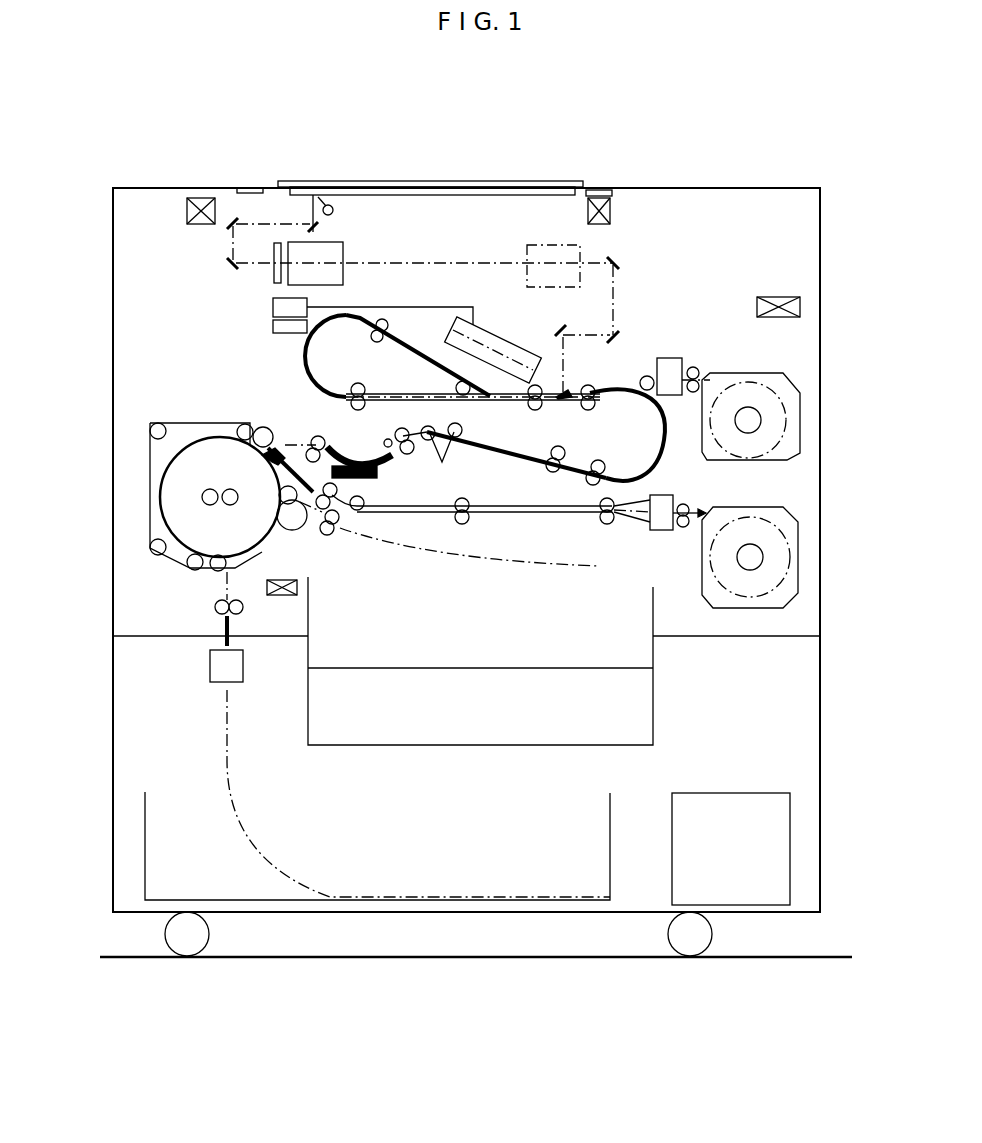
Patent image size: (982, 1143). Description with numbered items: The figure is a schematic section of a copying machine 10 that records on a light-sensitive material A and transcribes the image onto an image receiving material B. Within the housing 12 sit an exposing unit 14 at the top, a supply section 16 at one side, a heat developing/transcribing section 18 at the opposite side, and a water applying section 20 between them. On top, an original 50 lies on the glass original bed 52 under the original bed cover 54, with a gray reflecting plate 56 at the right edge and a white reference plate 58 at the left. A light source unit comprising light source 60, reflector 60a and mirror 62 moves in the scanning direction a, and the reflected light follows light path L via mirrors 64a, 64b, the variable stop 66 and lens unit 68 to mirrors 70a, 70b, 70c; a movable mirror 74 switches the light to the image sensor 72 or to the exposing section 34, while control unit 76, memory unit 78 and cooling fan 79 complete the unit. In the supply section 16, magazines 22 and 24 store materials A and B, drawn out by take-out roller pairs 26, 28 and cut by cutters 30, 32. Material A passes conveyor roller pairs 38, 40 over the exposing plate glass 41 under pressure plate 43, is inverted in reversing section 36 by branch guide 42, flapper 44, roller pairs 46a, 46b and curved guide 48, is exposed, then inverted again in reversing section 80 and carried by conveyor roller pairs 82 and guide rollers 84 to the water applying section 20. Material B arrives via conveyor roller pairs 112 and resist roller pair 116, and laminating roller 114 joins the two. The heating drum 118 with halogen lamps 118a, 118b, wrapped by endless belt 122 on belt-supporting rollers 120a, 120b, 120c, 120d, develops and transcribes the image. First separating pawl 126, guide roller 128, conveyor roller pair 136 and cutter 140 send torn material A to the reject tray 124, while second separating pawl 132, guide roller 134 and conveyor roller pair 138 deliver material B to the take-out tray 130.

The copying machine 10 is at (705, 152).
The housing 12 is at (820, 236).
The exposing unit 14 is at (442, 240).
The light-sensitive material/image receiving material supplying section 16 is at (795, 490).
The heat developing/transcribing section 18 is at (185, 376).
The water applying section 20 is at (355, 448).
The light-sensitive material magazine 22 is at (800, 420).
The image receiving material magazine 24 is at (798, 575).
The take-out roller pair 26 is at (700, 370).
The take-out roller pair 28 is at (683, 528).
The cutter 30 is at (672, 358).
The cutter 32 is at (655, 532).
The exposing section 34 is at (568, 410).
The reversing section 36 is at (300, 348).
The conveyor roller pair 38 is at (592, 408).
The conveyor roller pair 40 is at (504, 455).
The exposing plate glass 41 is at (575, 392).
The branch guide 42 is at (402, 427).
The pressure plate 43 is at (560, 400).
The flapper 44 is at (458, 382).
The conveyor roller pair 46a is at (403, 327).
The conveyor roller pair 46b is at (352, 406).
The curved guide 48 is at (308, 355).
The original 50 is at (428, 181).
The original bed 52 is at (560, 187).
The original bed cover 54 is at (500, 181).
The reflecting plate 56 is at (605, 190).
The white reference plate 58 is at (252, 188).
The light source 60 is at (335, 211).
The reflector 60a is at (330, 205).
The mirror 62 is at (322, 228).
The mirror 64a is at (226, 228).
The mirror 64b is at (226, 262).
The variable stop 66 is at (274, 275).
The lens unit 68 is at (343, 258).
The mirror 70a is at (620, 262).
The mirror 70b is at (620, 333).
The mirror 70c is at (560, 328).
The image sensor 72 is at (494, 342).
The movable mirror 74 is at (565, 361).
The control unit 76 is at (273, 308).
The memory unit 78 is at (273, 327).
The cooling fan 79 is at (777, 297).
The reversing section 80 is at (667, 450).
The conveyor roller pairs 82 is at (552, 472).
The guide rollers 84 is at (444, 464).
The conveyor roller pairs 112 is at (600, 524).
The laminating roller 114 is at (264, 426).
The resist roller pair 116 is at (325, 535).
The heating drum 118 is at (160, 505).
The halogen lamp 118a is at (228, 506).
The halogen lamp 118b is at (220, 480).
The belt-supporting roller 120a is at (243, 424).
The belt-supporting roller 120b is at (157, 423).
The belt-supporting roller 120c is at (150, 550).
The belt-supporting roller 120d is at (190, 568).
The endless belt 122 is at (150, 462).
The reject tray 124 is at (145, 848).
The first separating pawl 126 is at (240, 590).
The guide roller 128 is at (215, 571).
The take-out tray 130 is at (308, 652).
The second separating pawl 132 is at (279, 492).
The guide roller 134 is at (290, 530).
The conveyor roller pair 136 is at (222, 620).
The conveyor roller pair 138 is at (345, 540).
The cutter 140 is at (210, 670).
The light-sensitive material A is at (785, 395).
The image receiving material B is at (790, 530).
The scanning direction a is at (464, 205).
The light path L is at (424, 268).